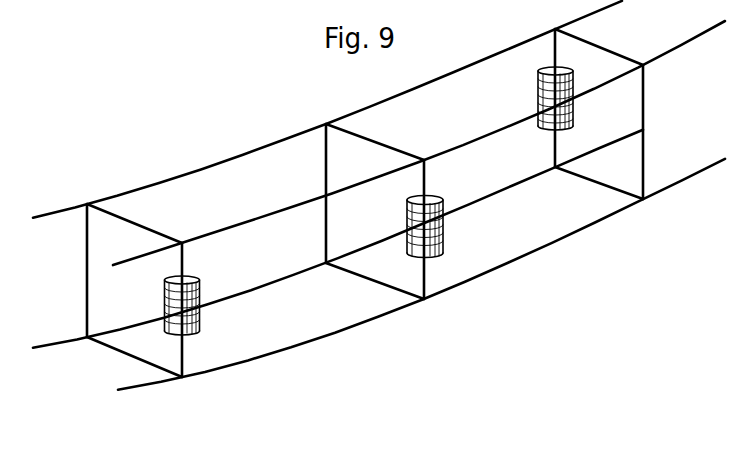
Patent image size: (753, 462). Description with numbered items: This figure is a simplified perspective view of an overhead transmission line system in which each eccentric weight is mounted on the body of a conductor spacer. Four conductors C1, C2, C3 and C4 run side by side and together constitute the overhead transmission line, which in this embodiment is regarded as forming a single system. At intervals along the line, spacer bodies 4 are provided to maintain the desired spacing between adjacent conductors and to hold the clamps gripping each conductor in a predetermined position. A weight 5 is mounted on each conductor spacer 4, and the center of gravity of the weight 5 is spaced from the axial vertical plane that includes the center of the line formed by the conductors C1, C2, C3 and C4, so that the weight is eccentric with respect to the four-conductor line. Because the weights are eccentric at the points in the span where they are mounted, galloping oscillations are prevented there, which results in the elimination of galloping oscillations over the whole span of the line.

The spacer body 4 is at (184, 358).
The weight 5 is at (200, 324).
The conductor C1 is at (120, 253).
The conductor C2 is at (56, 210).
The conductor C3 is at (52, 342).
The conductor C4 is at (123, 380).